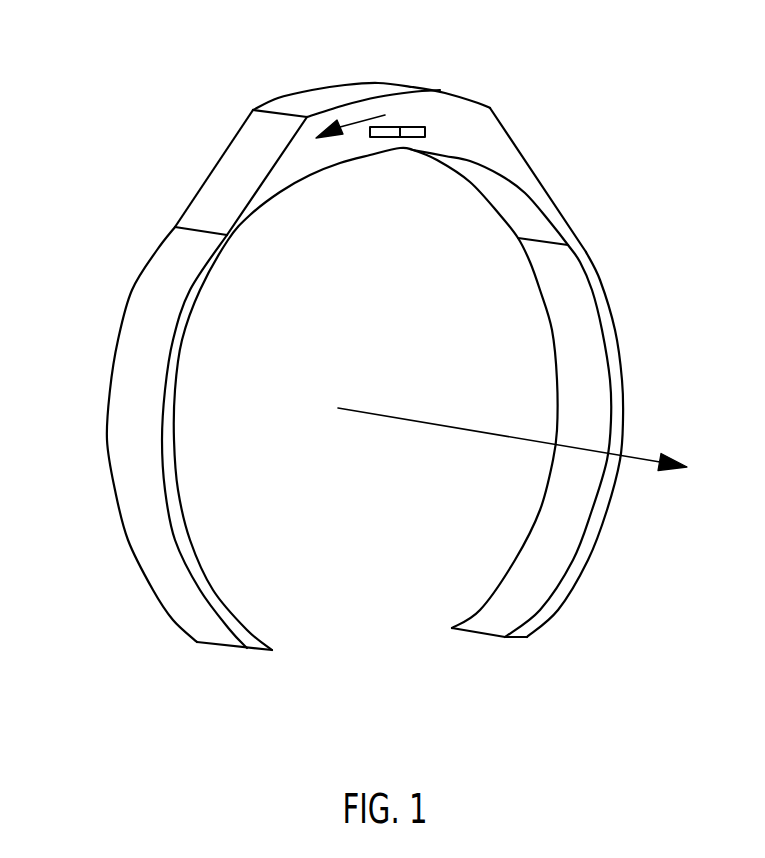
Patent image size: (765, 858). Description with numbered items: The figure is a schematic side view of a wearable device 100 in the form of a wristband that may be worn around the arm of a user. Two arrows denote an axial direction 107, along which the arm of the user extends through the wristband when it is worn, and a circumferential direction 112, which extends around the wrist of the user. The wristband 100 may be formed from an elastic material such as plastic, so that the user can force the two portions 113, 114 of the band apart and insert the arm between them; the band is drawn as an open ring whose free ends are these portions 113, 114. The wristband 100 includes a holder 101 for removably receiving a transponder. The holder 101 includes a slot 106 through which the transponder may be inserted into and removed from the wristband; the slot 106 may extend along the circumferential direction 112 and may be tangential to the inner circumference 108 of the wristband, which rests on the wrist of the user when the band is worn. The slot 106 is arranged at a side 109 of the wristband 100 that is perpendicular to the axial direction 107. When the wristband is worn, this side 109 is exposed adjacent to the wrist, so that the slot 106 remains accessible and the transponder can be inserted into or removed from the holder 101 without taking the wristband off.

The wearable device 100 is at (102, 63).
The holder 101 is at (259, 85).
The slot 106 is at (395, 137).
The axial direction 107 is at (640, 460).
The inner circumference 108 is at (334, 166).
The side 109 is at (445, 115).
The circumferential direction 112 is at (352, 123).
The portion of the wristband 113 is at (173, 618).
The portion of the wristband 114 is at (540, 622).